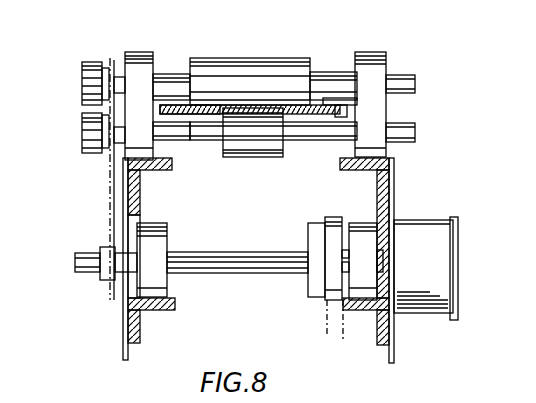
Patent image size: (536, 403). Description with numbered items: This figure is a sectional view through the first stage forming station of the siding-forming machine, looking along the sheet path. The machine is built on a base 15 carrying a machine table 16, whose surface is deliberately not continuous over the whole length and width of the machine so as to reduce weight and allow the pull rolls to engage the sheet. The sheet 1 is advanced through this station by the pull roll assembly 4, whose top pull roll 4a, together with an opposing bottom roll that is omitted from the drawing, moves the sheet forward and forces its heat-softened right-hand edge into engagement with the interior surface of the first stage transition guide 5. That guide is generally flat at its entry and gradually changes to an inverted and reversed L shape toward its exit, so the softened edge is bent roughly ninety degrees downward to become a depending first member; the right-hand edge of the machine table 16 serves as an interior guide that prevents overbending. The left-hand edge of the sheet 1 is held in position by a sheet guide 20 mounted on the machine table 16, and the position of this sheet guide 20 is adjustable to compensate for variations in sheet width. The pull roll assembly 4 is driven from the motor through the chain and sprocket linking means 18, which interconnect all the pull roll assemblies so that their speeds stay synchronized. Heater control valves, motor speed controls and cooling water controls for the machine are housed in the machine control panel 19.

The sheet 1 is at (307, 105).
The pull roll assembly 4 is at (363, 52).
The pull roll 4a is at (253, 58).
The first stage transition guide 5 is at (350, 108).
The base 15 is at (394, 178).
The machine table 16 is at (197, 110).
The chain and sprocket linking means 18 is at (110, 180).
The machine control panel 19 is at (455, 240).
The sheet guide 20 is at (168, 103).